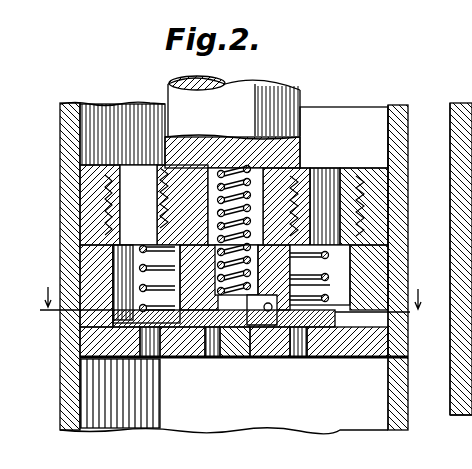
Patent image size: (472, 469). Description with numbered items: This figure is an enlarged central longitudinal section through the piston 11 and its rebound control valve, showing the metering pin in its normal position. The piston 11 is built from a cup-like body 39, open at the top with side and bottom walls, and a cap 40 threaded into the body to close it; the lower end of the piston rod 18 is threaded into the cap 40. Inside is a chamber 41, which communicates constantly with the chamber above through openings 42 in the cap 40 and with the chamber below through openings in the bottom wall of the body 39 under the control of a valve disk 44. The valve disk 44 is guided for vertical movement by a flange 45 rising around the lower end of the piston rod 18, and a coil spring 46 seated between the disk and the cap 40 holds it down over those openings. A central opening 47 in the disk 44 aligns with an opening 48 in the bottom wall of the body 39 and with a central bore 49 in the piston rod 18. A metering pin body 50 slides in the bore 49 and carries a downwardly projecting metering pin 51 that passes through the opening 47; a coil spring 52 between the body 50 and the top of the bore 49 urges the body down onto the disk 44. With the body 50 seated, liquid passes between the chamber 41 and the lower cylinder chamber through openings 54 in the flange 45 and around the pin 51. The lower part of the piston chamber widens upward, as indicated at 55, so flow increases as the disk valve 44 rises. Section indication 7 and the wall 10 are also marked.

The section line 7- 7 is at (239, 290).
The housing wall 10 is at (72, 102).
The piston 11 is at (392, 238).
The piston rod 18 is at (285, 100).
The cup-like body 39 is at (100, 261).
The cap 40 is at (378, 167).
The chamber 41 is at (345, 252).
The openings 42 is at (143, 150).
The valve disk 44 is at (330, 282).
The flange 45 is at (335, 270).
The coil spring 46 is at (133, 262).
The central opening 47 is at (203, 340).
The opening 48 is at (258, 328).
The central bore 49 is at (305, 178).
The metering pin body 50 is at (320, 192).
The metering pin 51 is at (240, 360).
The coil spring 52 is at (226, 143).
The openings 54 is at (175, 345).
The upwardly increasing sectional area 55 is at (345, 322).